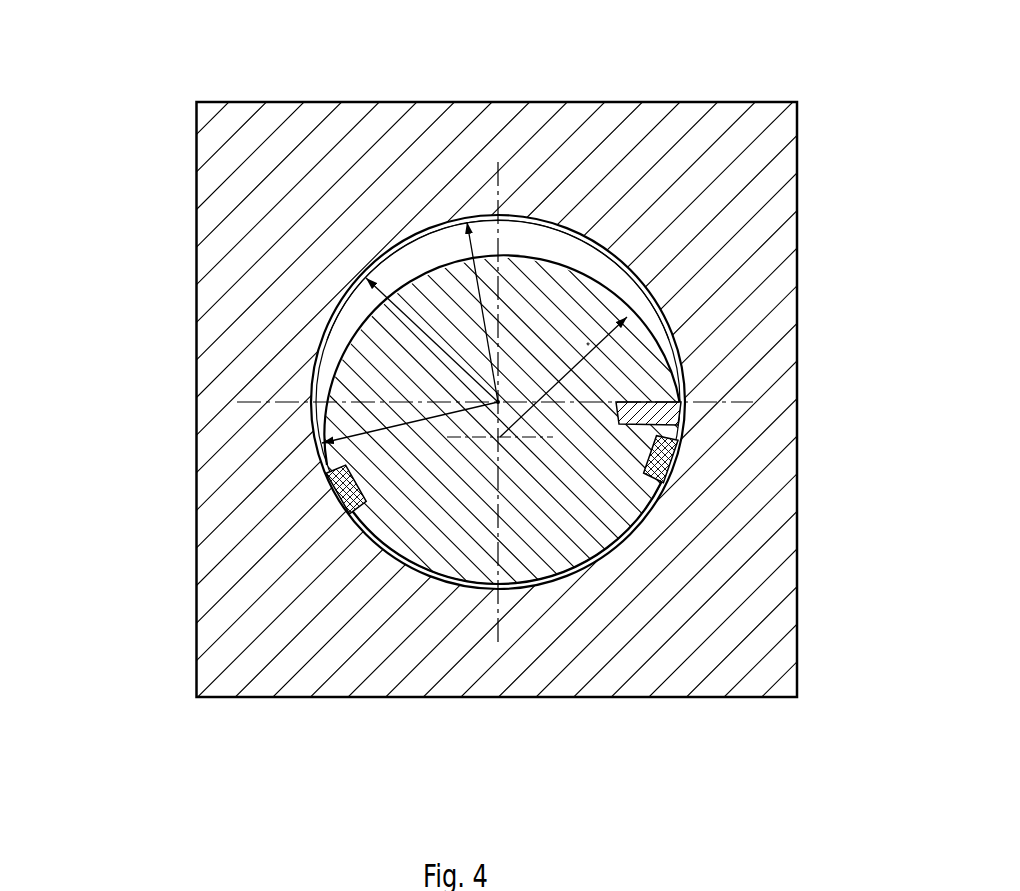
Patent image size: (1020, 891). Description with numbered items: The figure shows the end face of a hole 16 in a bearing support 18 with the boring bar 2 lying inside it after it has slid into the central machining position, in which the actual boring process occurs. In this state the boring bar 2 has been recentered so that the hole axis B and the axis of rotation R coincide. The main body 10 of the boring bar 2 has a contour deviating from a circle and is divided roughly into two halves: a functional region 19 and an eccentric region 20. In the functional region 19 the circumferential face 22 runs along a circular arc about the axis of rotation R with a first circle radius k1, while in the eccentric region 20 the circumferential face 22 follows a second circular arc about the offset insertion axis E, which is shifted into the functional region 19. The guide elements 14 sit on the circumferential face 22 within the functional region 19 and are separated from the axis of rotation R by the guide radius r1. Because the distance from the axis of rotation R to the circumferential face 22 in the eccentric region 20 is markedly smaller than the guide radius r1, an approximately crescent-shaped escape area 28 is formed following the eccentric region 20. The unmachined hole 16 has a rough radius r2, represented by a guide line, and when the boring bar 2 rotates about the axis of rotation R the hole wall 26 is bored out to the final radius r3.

The boring bar 2 is at (510, 505).
The main body 10 is at (430, 537).
The guide elements 14 is at (340, 488).
The holes 16 is at (552, 245).
The bearing supports 18 is at (778, 227).
The functional region 19 is at (446, 501).
The eccentric region 20 is at (561, 337).
The circumferential face 22 is at (573, 275).
The hole wall 26 is at (322, 358).
The escape area 28 is at (347, 323).
The axis of rotation R is at (264, 357).
The hole axis B is at (498, 402).
The guide radius r1 is at (498, 402).
The rough radius r2 is at (428, 323).
The final radius r3 is at (477, 300).
The first circle radius k1 is at (592, 342).
The insertion axis E is at (500, 437).